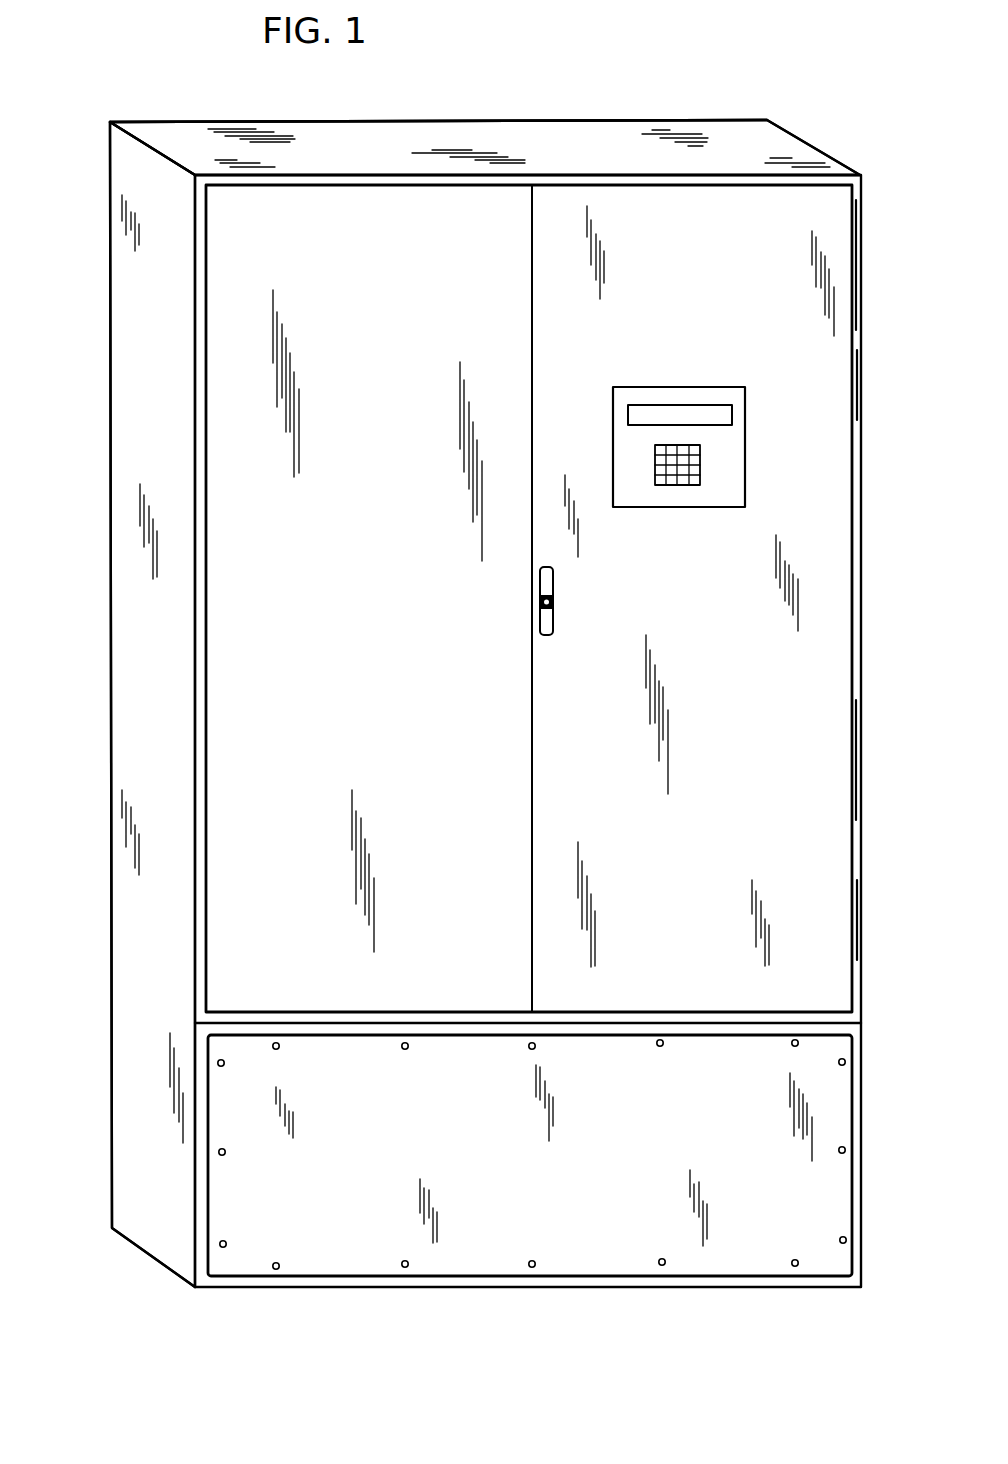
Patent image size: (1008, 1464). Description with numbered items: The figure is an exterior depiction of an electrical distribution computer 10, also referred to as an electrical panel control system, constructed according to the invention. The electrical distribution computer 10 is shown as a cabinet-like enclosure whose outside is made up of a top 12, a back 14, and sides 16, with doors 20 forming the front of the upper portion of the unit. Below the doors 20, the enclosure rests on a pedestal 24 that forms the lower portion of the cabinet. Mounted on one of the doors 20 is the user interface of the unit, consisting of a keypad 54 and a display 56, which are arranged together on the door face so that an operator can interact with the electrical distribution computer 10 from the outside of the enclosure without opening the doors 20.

The electrical distribution computer 10 is at (680, 100).
The top 12 is at (270, 143).
The back 14 is at (406, 120).
The sides 16 is at (127, 488).
The doors 20 is at (245, 680).
The pedestal 24 is at (140, 1172).
The keypad 54 is at (695, 475).
The display 56 is at (720, 413).